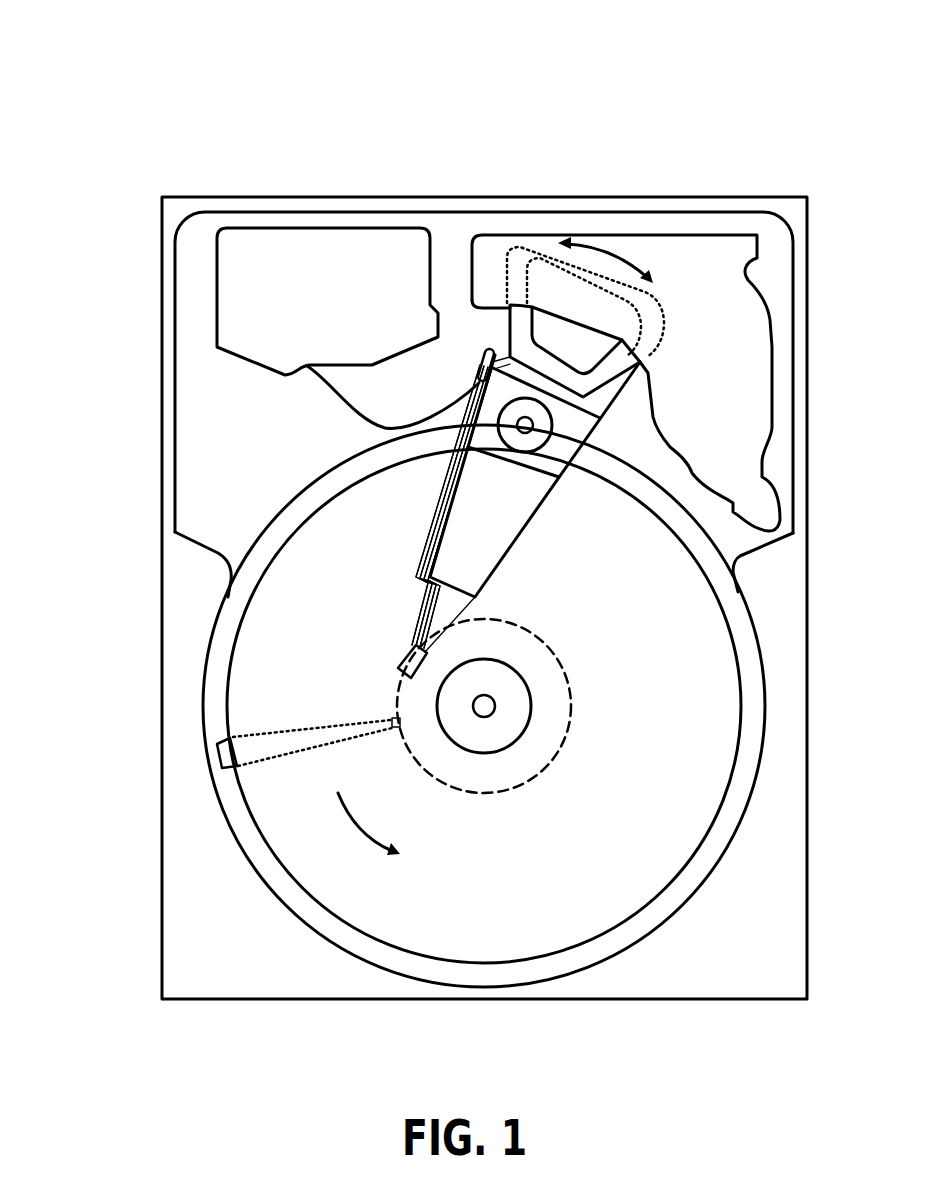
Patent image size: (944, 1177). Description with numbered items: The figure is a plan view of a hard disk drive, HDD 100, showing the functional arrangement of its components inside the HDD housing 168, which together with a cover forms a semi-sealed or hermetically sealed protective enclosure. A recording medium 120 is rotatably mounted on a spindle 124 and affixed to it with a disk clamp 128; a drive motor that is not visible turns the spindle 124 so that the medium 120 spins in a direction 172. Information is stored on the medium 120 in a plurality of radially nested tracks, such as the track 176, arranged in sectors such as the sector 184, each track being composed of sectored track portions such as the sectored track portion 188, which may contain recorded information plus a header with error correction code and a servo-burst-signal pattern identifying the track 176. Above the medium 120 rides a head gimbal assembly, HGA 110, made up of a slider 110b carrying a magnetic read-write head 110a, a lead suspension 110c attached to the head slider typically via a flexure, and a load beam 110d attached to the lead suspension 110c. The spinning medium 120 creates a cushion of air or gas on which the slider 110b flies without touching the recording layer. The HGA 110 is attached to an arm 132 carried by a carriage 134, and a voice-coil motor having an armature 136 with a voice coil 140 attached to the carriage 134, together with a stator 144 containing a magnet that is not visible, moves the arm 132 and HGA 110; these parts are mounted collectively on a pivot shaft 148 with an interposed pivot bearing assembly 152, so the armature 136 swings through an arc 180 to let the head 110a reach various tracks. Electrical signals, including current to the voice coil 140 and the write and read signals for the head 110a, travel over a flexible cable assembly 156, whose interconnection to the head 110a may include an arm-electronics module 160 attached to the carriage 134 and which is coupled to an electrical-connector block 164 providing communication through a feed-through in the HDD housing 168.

The hard disk drive 100 is at (88, 74).
The head gimbal assembly 110 is at (92, 508).
The magnetic read-write head 110a is at (414, 633).
The slider 110b is at (421, 615).
The lead suspension 110c is at (427, 598).
The load beam 110d is at (424, 588).
The recording medium 120 is at (669, 657).
The spindle 124 is at (488, 705).
The disk clamp 128 is at (510, 723).
The arm 132 is at (477, 540).
The carriage 134 is at (543, 458).
The armature 136 is at (503, 338).
The voice coil 140 is at (522, 317).
The stator 144 is at (738, 325).
The pivot shaft 148 is at (534, 425).
The pivot bearing assembly 152 is at (538, 440).
The flexible cable assembly 156 is at (340, 402).
The arm-electronics module 160 is at (477, 392).
The electrical-connector block 164 is at (243, 298).
The HDD housing 168 is at (790, 210).
The direction 172 is at (394, 823).
The track 176 is at (560, 667).
The arc 180 is at (594, 271).
The sector 184 is at (217, 753).
The sectored track portion 188 is at (391, 722).